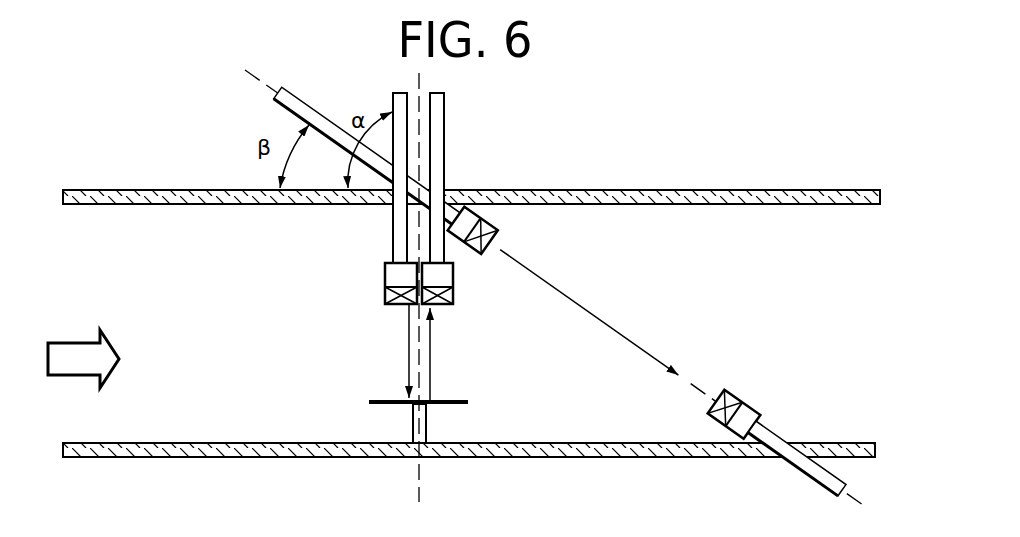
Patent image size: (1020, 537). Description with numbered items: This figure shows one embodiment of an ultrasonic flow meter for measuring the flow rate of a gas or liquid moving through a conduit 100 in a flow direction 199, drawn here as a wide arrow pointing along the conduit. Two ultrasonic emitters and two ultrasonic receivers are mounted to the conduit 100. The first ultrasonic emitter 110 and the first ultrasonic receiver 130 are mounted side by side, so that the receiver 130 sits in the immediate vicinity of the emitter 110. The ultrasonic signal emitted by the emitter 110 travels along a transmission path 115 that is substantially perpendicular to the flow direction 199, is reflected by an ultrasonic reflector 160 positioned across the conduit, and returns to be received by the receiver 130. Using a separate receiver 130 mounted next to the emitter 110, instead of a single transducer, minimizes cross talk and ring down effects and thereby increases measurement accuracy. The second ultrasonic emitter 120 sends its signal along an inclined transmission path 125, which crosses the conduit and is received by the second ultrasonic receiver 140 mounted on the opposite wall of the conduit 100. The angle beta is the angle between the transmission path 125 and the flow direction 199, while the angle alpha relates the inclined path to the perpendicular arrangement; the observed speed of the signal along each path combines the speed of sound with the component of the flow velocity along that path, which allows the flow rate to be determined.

The conduit 100 is at (781, 188).
The first ultrasonic emitter 110 is at (384, 278).
The transmission path 115 is at (434, 337).
The second ultrasonic emitter 120 is at (508, 228).
The transmission path 125 is at (630, 340).
The first ultrasonic receiver 130 is at (454, 284).
The second ultrasonic receiver 140 is at (753, 411).
The ultrasonic reflector 160 is at (376, 393).
The flow direction 199 is at (73, 342).